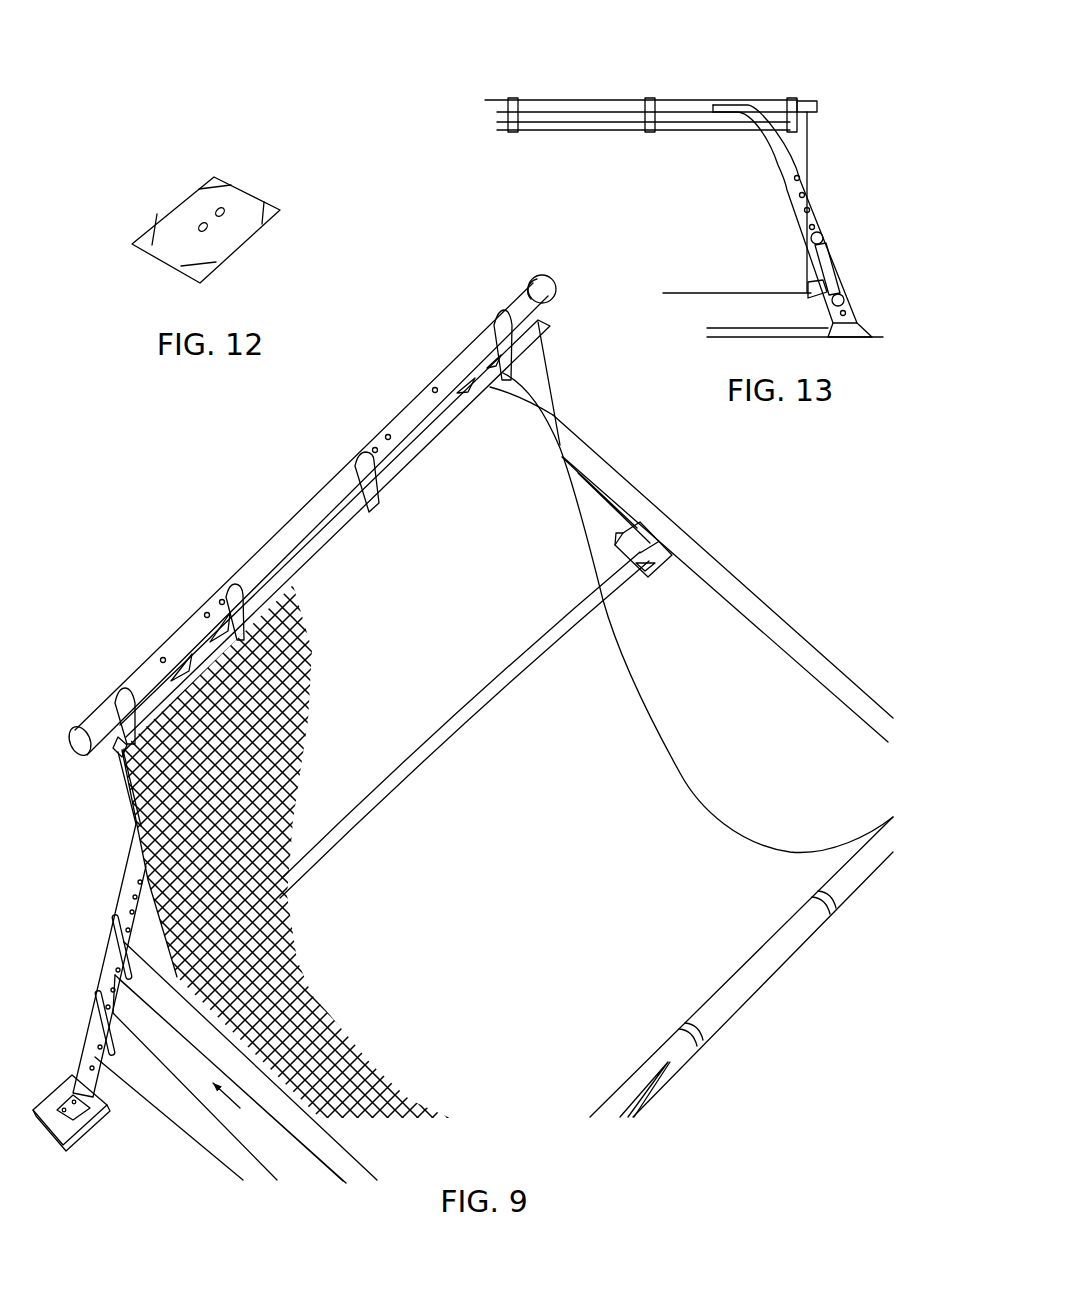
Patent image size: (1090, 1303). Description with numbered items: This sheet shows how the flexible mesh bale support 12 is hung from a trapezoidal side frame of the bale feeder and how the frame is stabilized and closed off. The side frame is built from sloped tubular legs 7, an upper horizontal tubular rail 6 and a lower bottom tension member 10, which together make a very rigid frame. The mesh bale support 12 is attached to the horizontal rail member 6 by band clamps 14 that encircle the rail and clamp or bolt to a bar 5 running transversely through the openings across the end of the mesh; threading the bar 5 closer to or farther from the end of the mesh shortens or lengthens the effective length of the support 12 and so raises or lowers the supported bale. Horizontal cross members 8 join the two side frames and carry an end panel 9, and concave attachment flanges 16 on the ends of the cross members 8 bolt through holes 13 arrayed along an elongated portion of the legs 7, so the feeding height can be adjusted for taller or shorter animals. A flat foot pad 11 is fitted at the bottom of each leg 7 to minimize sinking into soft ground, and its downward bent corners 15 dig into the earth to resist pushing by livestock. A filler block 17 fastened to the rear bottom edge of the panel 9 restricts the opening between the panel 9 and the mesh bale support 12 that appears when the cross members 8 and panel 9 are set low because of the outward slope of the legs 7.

In FIG. 13, the bar 5 is at (813, 126).
In FIG. 9, the bar 5 is at (117, 756).
In FIG. 9, the upper horizontal tubular rail 6 is at (68, 754).
In FIG. 13, the sloped tubular leg 7 is at (835, 242).
In FIG. 9, the sloped tubular leg 7 is at (73, 1057).
In FIG. 9, the horizontal cross member 8 is at (212, 1145).
In FIG. 13, the end panel 9 is at (841, 270).
In FIG. 9, the end panel 9 is at (233, 1104).
In FIG. 13, the lower bottom tension member 10 is at (785, 323).
In FIG. 9, the lower bottom tension member 10 is at (442, 754).
In FIG. 12, the flat foot pad 11 is at (247, 185).
In FIG. 9, the flat foot pad 11 is at (88, 1128).
In FIG. 13, the flexible mesh bale support 12 is at (814, 153).
In FIG. 9, the flexible mesh bale support 12 is at (313, 720).
In FIG. 13, the holes 13 is at (850, 306).
In FIG. 9, the holes 13 is at (131, 877).
In FIG. 13, the band clamp 14 is at (788, 95).
In FIG. 9, the band clamp 14 is at (118, 688).
In FIG. 12, the downward bent corner 15 is at (215, 176).
In FIG. 9, the concave attachment flange 16 is at (118, 948).
In FIG. 13, the filler block 17 is at (815, 287).